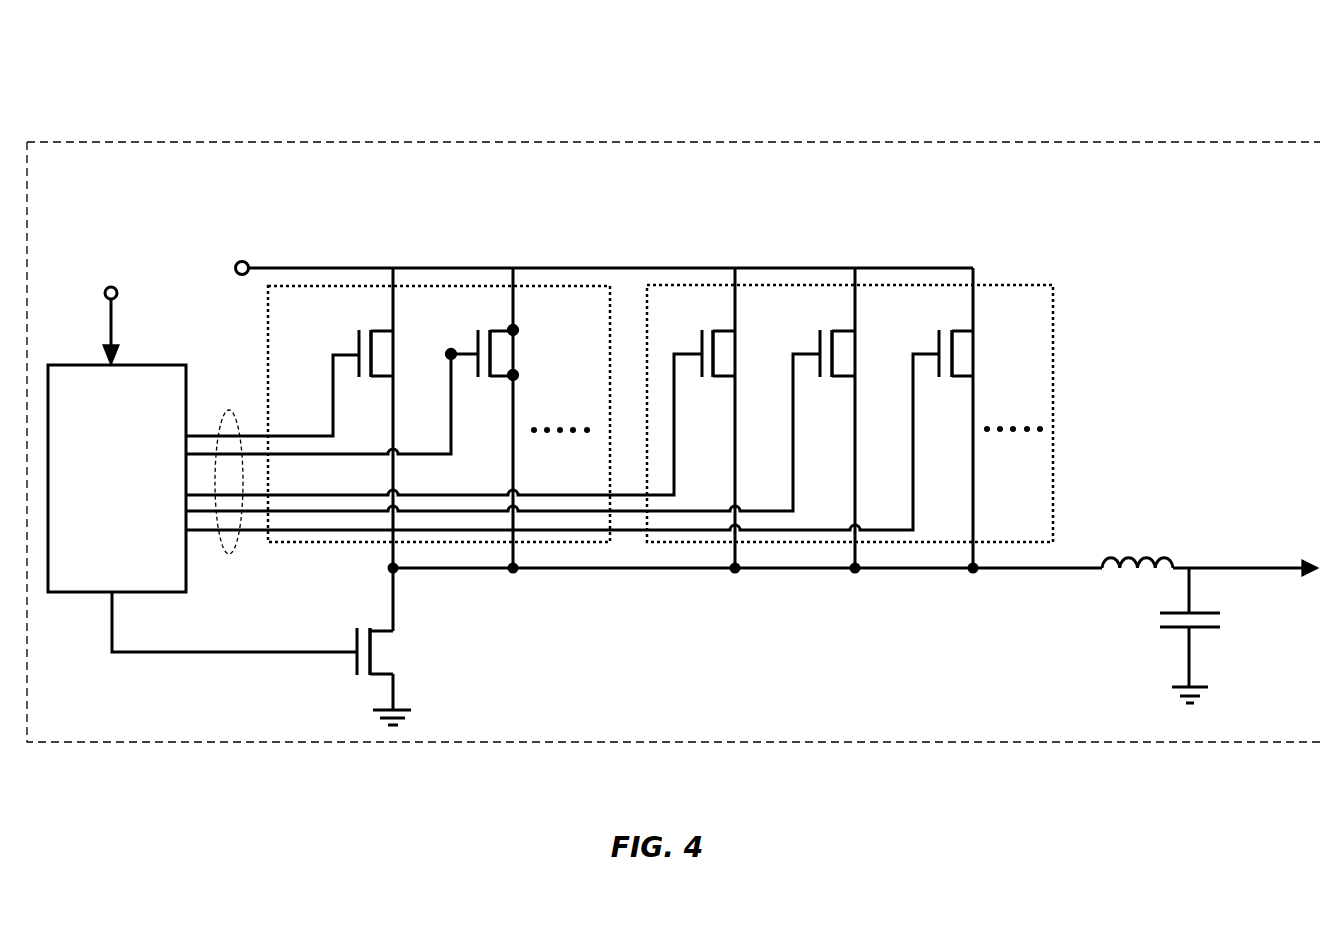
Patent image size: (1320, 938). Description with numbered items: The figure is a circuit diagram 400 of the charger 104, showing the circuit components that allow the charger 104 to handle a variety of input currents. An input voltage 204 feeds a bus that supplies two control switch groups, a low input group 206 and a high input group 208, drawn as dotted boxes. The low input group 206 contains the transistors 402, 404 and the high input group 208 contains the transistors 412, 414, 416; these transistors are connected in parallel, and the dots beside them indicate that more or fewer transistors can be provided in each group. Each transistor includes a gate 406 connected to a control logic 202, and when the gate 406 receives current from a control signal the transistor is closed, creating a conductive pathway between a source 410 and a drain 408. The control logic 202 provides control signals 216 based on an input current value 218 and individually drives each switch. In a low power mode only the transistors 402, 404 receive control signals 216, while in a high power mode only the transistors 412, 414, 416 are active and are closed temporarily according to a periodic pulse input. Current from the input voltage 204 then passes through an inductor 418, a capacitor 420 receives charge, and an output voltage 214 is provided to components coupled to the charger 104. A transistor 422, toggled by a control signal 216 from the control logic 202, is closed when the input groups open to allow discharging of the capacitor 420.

The circuit diagram 400 is at (264, 90).
The charger 104 is at (1190, 234).
The input voltage 204 is at (242, 261).
The input current value 218 is at (117, 290).
The control logic 202 is at (101, 509).
The control signals 216 is at (232, 554).
The low input group 206 is at (362, 285).
The high input group 208 is at (768, 284).
The transistor 402 is at (345, 342).
The transistor 404 is at (470, 336).
The gate 406 is at (446, 355).
The drain 408 is at (516, 324).
The source 410 is at (518, 371).
The transistor 412 is at (698, 336).
The transistor 414 is at (816, 341).
The transistor 416 is at (936, 342).
The inductor 418 is at (1138, 558).
The output voltage 214 is at (1286, 566).
The capacitor 420 is at (1160, 628).
The transistor 422 is at (354, 668).